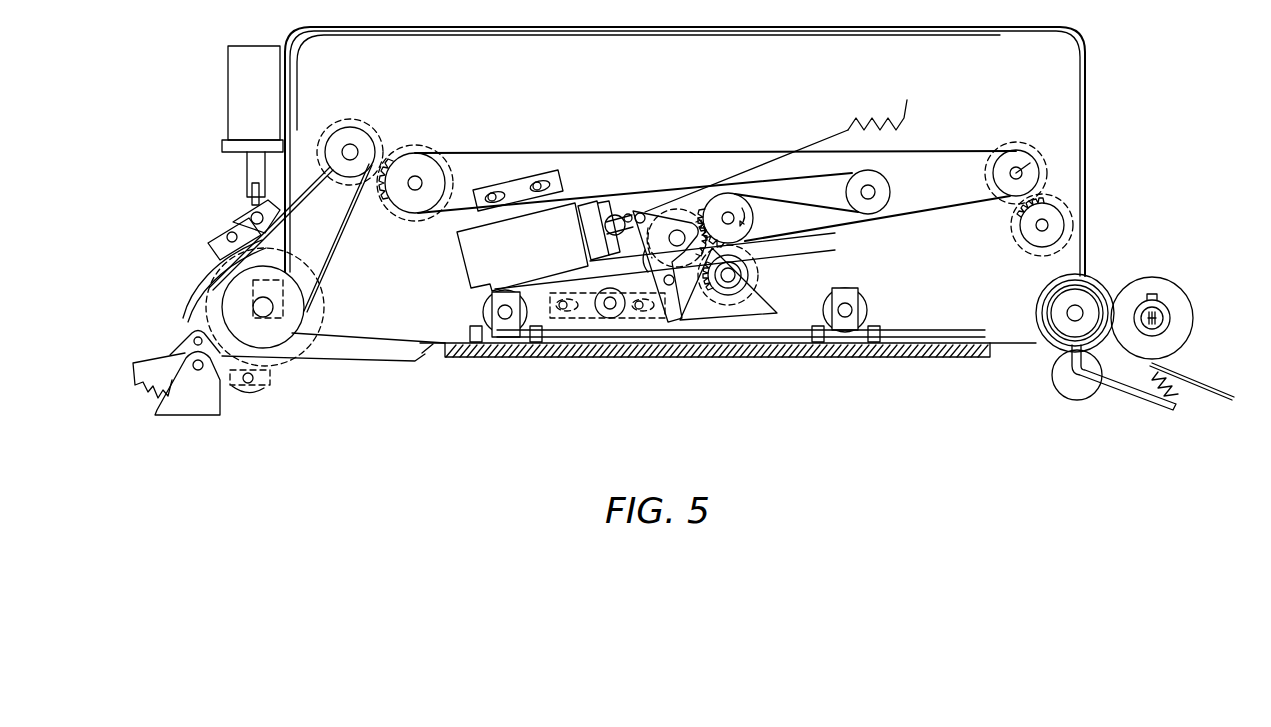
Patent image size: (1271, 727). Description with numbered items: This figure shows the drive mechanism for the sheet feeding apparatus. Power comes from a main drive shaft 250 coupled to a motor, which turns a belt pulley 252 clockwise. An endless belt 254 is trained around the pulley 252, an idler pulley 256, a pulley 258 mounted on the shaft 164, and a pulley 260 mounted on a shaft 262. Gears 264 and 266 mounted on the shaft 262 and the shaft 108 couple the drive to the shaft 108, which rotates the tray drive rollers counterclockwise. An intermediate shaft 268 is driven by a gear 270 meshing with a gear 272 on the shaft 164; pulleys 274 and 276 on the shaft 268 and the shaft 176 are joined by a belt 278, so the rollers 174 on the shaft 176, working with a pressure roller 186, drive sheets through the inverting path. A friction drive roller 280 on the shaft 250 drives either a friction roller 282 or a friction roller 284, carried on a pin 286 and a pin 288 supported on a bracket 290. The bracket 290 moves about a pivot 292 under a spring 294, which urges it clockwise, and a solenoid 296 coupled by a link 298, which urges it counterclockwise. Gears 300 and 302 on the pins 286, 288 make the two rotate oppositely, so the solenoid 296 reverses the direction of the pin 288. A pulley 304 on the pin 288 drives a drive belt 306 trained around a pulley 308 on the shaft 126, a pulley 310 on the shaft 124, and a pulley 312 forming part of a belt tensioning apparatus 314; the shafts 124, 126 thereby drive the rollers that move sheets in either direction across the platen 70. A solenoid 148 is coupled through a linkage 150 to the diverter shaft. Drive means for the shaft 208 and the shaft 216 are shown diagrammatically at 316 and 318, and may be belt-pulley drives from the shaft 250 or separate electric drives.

The solenoid 148 is at (236, 72).
The linkage 150 is at (252, 203).
The pressure roller 186 is at (213, 235).
The pulley 276 is at (224, 269).
The rollers 174 is at (203, 292).
The shaft 176 is at (270, 320).
The intermediate shaft 268 is at (345, 140).
The gear 270 is at (372, 140).
The pulley 274 is at (345, 168).
The gear 272 is at (426, 149).
The pulley 258 is at (439, 155).
The shaft 164 is at (452, 170).
The belt 278 is at (343, 243).
The solenoid 296 is at (540, 249).
The drive belt 306 is at (579, 236).
The link 298 is at (614, 210).
The gear 300 is at (639, 215).
The friction roller 282 is at (681, 218).
The friction drive roller 280 is at (686, 232).
The pin 286 is at (658, 268).
The spring 294 is at (854, 126).
The endless belt 254 is at (834, 208).
The idler pulley 256 is at (892, 188).
The belt pulley 252 is at (752, 223).
The main drive shaft 250 is at (738, 240).
The gear 302 is at (752, 268).
The friction roller 284 is at (752, 285).
The shaft 124 is at (850, 292).
The pulley 310 is at (865, 305).
The pulley 308 is at (484, 307).
The shaft 126 is at (508, 338).
The belt tensioning apparatus 314 is at (585, 320).
The pulley 312 is at (612, 318).
The pivot 292 is at (668, 305).
The pulley 304 is at (700, 322).
The pin 288 is at (744, 316).
The bracket 290 is at (735, 330).
The platen 70 is at (944, 357).
The pulley 260 is at (1010, 160).
The gear 264 is at (1023, 144).
The shaft 262 is at (1030, 163).
The gear 266 is at (1068, 214).
The shaft 108 is at (1062, 228).
The drive means 318 is at (1088, 300).
The drive means 316 is at (1160, 300).
The shaft 216 is at (1058, 345).
The shaft 208 is at (1170, 322).